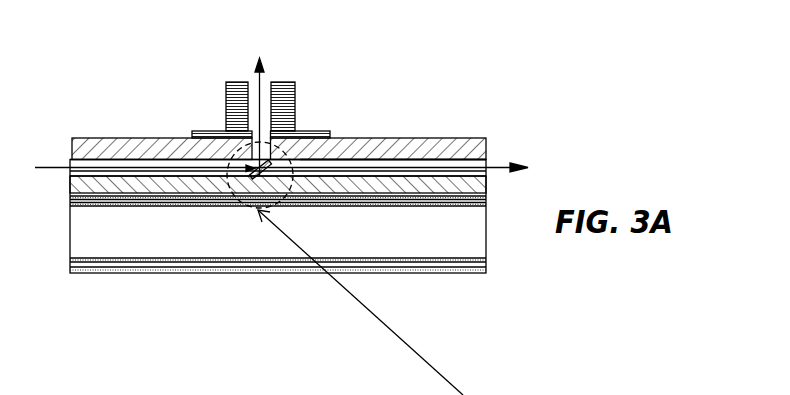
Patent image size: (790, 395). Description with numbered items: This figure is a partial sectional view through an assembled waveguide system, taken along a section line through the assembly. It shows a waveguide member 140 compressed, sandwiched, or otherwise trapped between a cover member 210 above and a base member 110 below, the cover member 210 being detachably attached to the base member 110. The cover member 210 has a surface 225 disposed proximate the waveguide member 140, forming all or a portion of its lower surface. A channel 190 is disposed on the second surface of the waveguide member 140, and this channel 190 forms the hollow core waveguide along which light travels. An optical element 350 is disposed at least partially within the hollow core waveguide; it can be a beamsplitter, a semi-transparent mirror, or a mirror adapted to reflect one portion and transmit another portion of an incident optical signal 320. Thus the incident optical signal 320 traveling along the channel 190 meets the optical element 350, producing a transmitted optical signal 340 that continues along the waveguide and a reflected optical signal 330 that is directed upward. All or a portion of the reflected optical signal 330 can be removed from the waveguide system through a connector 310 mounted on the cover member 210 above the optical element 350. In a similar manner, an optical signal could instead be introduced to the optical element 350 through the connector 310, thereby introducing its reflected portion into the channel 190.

The base member 110 is at (452, 274).
The waveguide member 140 is at (173, 193).
The channel 190 is at (163, 163).
The cover member 210 is at (383, 147).
The surface 225 is at (352, 163).
The connector 310 is at (235, 82).
The incident optical signal 320 is at (123, 168).
The reflected optical signal 330 is at (283, 157).
The transmitted optical signal 340 is at (452, 168).
The optical element 350 is at (258, 180).